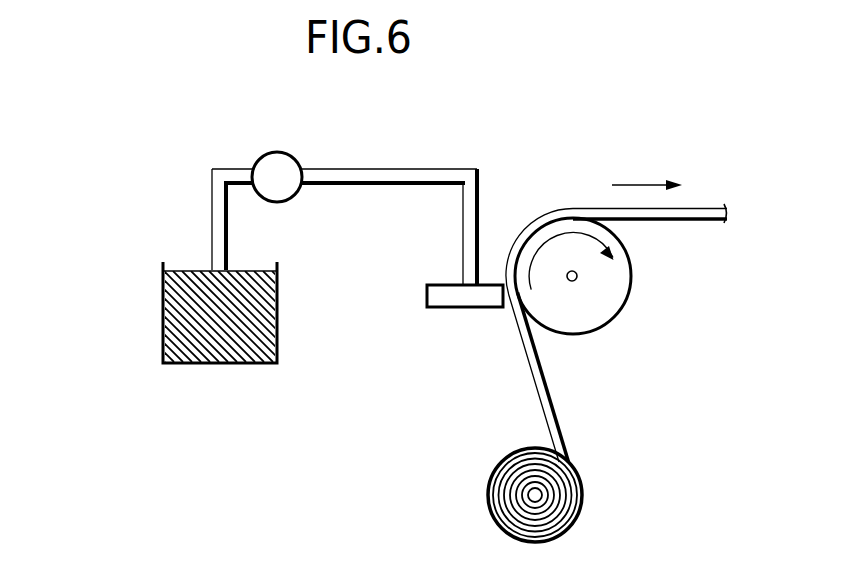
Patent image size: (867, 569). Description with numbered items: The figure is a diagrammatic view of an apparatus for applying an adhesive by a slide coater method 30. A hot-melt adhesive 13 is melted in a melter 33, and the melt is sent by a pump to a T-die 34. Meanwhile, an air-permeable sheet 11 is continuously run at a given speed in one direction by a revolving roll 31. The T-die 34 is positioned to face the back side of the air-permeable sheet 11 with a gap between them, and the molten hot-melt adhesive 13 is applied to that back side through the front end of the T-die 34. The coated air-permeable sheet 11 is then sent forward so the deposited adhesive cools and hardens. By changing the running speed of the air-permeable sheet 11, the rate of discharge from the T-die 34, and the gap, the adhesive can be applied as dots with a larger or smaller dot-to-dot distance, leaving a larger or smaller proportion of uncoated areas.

The slide coater method 30 is at (522, 148).
The revolving roll 31 is at (620, 295).
The melter 33 is at (163, 295).
The hot-melt adhesive 13 is at (193, 274).
The T-die 34 is at (440, 291).
The air-permeable sheet 11 is at (555, 405).